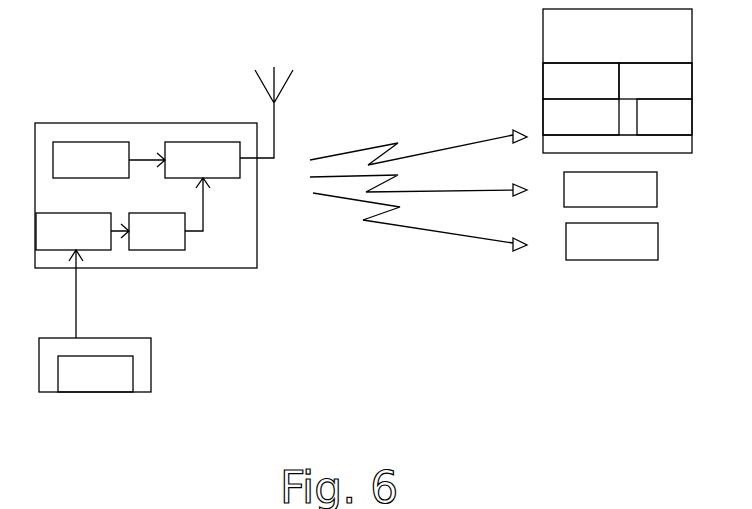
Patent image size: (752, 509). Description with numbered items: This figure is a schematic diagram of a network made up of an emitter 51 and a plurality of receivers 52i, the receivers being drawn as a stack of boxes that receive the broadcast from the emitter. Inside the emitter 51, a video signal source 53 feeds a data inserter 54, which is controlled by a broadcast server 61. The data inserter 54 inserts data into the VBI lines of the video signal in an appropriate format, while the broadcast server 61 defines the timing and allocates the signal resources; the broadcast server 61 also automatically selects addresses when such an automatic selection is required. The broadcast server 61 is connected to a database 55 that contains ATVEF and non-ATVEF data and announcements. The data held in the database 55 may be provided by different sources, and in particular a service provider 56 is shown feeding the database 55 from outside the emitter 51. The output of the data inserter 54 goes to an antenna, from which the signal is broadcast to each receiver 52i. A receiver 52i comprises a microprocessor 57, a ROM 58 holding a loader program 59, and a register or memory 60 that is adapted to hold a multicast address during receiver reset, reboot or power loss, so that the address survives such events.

The emitter 51 is at (188, 268).
The video signal source 53 is at (109, 160).
The data inserter 54 is at (202, 160).
The database 55 is at (82, 231).
The broadcast server 61 is at (169, 214).
The service provider 56 is at (95, 321).
The receiver 52i is at (617, 81).
The microprocessor 57 is at (581, 81).
The ROM 58 is at (655, 81).
The loader program 59 is at (664, 117).
The register or memory 60 is at (581, 117).